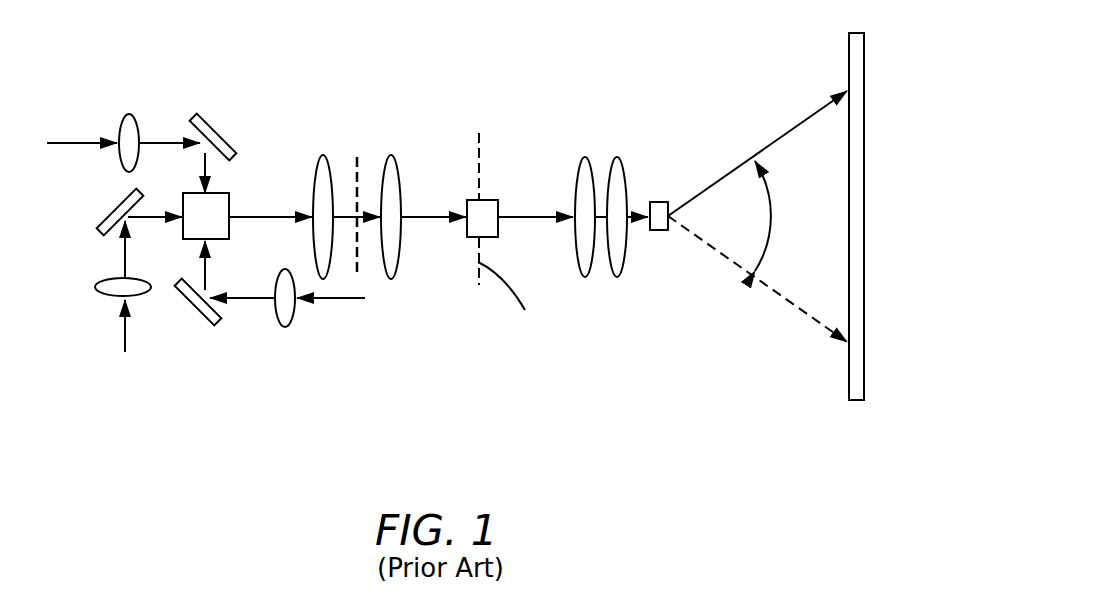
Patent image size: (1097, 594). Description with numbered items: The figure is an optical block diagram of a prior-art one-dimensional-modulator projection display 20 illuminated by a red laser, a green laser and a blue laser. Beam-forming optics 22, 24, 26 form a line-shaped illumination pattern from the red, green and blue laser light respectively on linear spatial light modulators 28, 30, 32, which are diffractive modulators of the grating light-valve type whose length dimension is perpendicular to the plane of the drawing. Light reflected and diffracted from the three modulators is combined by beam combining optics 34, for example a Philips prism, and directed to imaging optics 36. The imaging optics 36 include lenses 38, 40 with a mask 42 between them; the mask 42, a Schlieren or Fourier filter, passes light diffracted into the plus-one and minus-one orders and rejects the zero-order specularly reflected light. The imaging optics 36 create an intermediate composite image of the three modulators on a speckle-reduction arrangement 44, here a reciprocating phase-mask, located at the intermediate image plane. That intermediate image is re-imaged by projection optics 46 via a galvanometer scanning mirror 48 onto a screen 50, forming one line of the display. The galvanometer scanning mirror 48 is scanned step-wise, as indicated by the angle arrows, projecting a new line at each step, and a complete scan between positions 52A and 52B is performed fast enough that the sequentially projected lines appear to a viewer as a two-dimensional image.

The display 20 is at (562, 425).
The beam-forming optics 22 is at (133, 115).
The beam-forming optics 24 is at (100, 295).
The beam-forming optics 26 is at (283, 327).
The spatial light modulator 28 is at (207, 118).
The spatial light modulator 30 is at (188, 301).
The spatial light modulator 32 is at (92, 232).
The beam combining optics 34 is at (219, 200).
The imaging optics 36 is at (394, 232).
The lens 38 is at (323, 160).
The lens 40 is at (393, 167).
The mask 42 is at (357, 162).
The speckle-reduction arrangement 44 is at (480, 203).
The projection optics 46 is at (602, 150).
The galvanometer scanning mirror 48 is at (657, 203).
The screen 50 is at (849, 55).
The position 52A is at (787, 130).
The position 52B is at (767, 288).